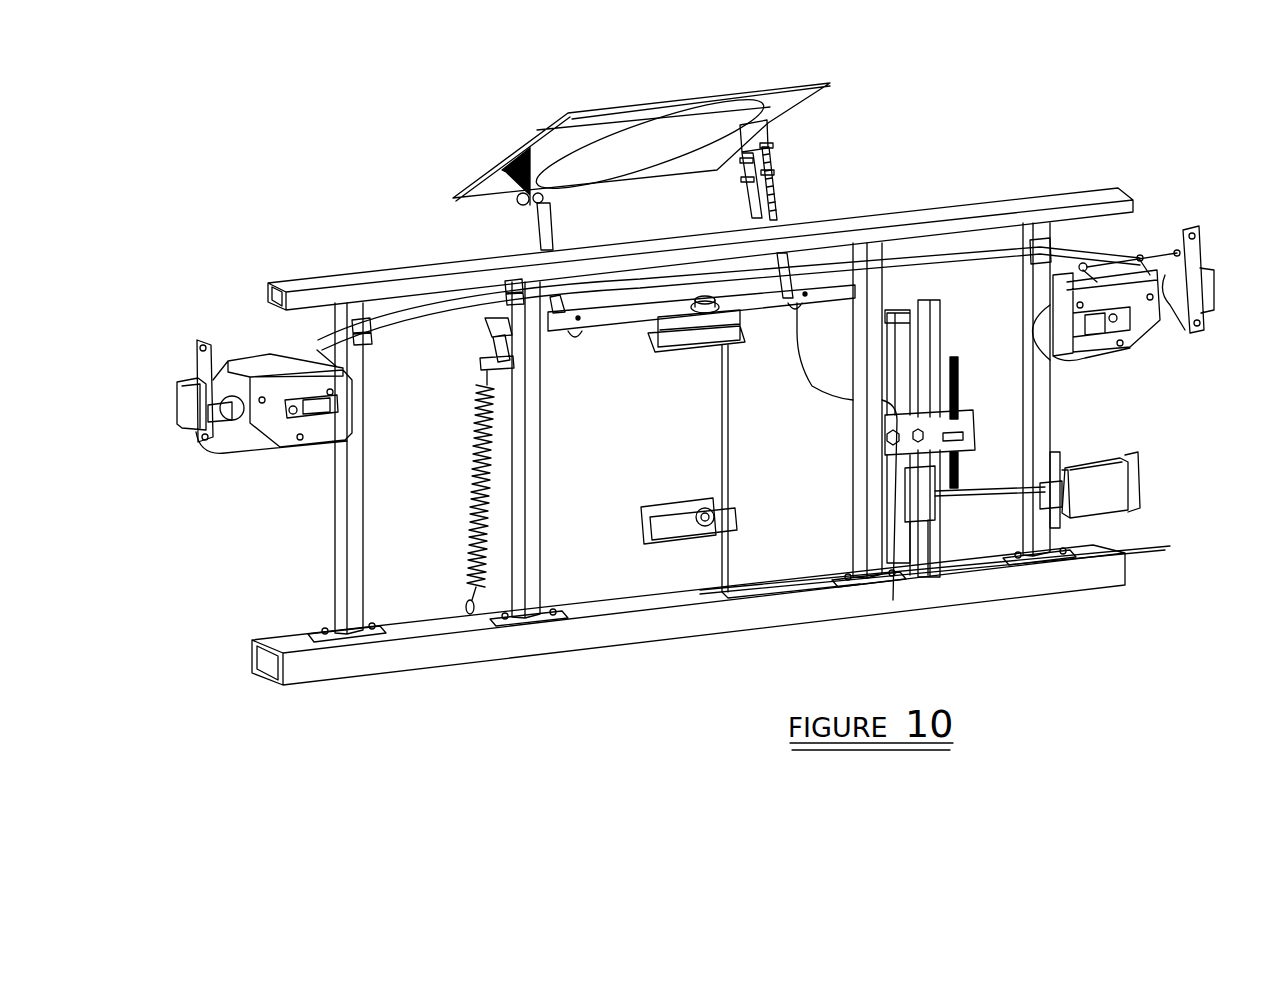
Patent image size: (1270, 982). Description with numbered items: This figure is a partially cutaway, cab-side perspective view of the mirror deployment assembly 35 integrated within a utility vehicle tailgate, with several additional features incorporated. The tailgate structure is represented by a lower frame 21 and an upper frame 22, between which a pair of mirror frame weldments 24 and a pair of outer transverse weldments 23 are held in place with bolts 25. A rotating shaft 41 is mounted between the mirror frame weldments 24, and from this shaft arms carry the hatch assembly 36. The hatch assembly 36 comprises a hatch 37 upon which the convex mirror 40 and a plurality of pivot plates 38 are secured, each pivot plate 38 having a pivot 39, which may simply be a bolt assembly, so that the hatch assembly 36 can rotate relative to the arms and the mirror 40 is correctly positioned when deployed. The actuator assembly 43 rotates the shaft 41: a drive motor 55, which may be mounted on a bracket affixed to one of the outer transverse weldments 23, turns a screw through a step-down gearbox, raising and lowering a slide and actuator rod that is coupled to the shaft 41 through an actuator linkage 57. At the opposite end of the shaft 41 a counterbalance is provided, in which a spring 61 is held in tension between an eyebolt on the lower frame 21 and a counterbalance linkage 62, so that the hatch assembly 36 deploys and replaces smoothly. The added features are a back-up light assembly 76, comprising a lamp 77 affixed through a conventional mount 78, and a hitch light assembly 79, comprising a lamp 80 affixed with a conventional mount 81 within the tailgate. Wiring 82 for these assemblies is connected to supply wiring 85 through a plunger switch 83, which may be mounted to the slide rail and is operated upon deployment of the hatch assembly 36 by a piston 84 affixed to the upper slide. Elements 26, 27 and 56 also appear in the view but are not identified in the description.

The lower frame 21 is at (1041, 588).
The upper frame 22 is at (1086, 194).
The outer transverse weldments 23 is at (340, 526).
The mirror frame weldments 24 is at (538, 553).
The bolts 25 is at (322, 626).
The hinge bracket assembly 26 is at (700, 348).
The hinge housing 27 is at (193, 455).
The mirror deployment assembly 35 is at (383, 136).
The hatch assembly 36 is at (656, 163).
The hatch 37 is at (573, 114).
The pivot plates 38 is at (512, 166).
The pivot 39 is at (516, 202).
The convex mirror 40 is at (657, 142).
The rotating shaft 41 is at (605, 316).
The actuator assembly 43 is at (928, 600).
The drive motor 55 is at (1107, 480).
The coupling 56 is at (1107, 518).
The actuator linkage 57 is at (892, 338).
The spring 61 is at (466, 515).
The counterbalance linkage 62 is at (478, 343).
The back-up light assembly 76 is at (648, 640).
The lamp 77 is at (691, 512).
The conventional mount 78 is at (737, 523).
The hitch light assembly 79 is at (592, 412).
The lamp 80 is at (715, 348).
The conventional mount 81 is at (700, 336).
The wiring 82 is at (728, 452).
The plunger switch 83 is at (893, 600).
The piston 84 is at (895, 466).
The supply wiring 85 is at (1150, 558).